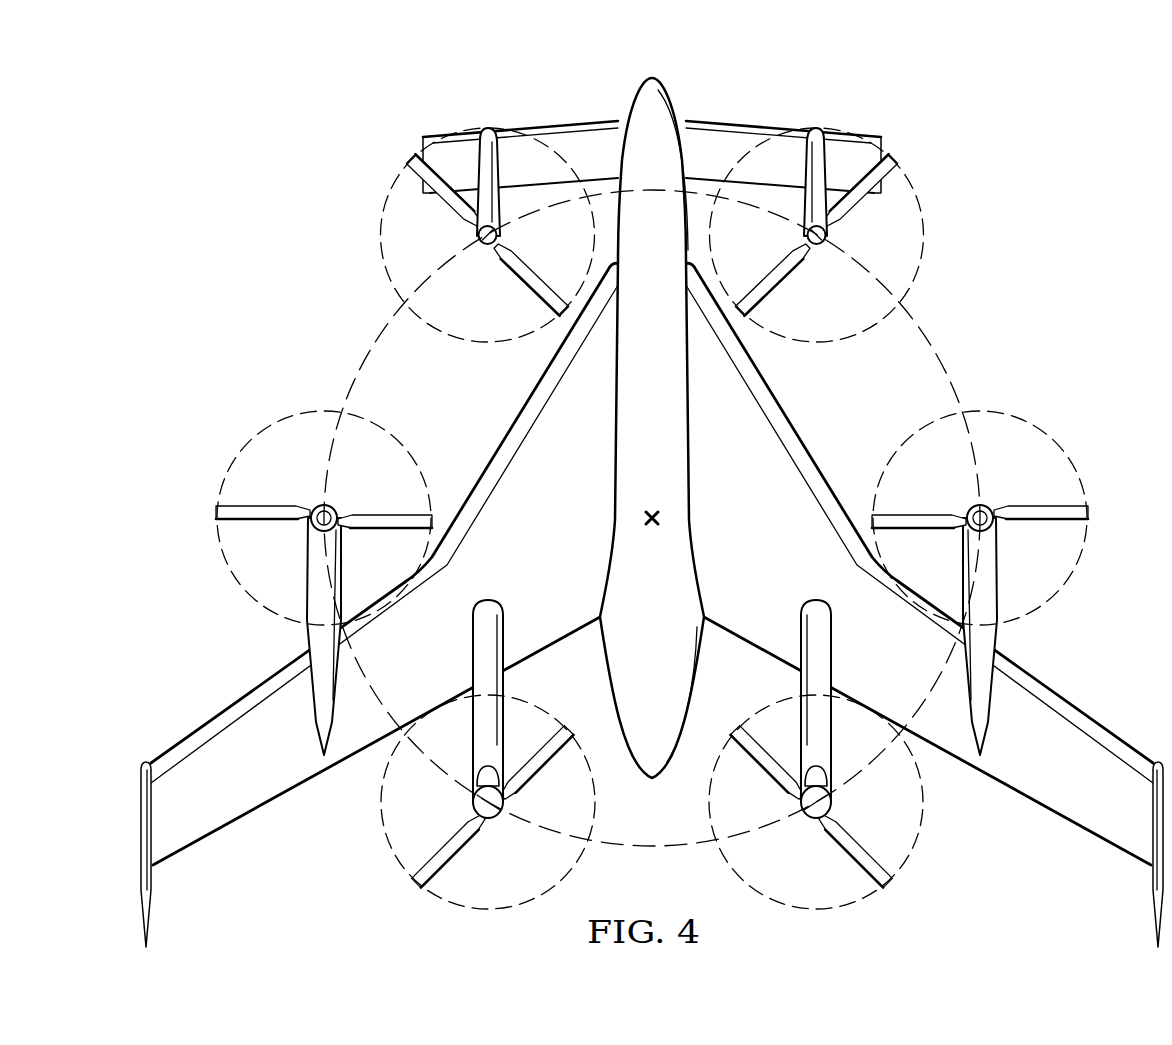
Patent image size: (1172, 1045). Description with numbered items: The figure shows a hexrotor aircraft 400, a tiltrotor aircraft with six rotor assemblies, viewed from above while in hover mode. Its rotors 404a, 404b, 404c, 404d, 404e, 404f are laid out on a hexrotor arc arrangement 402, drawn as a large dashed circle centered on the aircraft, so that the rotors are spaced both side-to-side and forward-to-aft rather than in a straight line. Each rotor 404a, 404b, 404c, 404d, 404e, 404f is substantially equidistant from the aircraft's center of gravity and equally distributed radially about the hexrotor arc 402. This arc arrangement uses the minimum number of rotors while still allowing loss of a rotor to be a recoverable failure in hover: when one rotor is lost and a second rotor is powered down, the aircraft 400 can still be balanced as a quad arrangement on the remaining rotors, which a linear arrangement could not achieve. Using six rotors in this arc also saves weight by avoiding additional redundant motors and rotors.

The hexrotor aircraft 400 is at (392, 90).
The hexrotor arc arrangement 402 is at (921, 337).
The rotor 404a is at (311, 490).
The rotor 404b is at (446, 808).
The rotor 404c is at (857, 808).
The rotor 404d is at (992, 490).
The rotor 404e is at (857, 241).
The rotor 404f is at (446, 241).